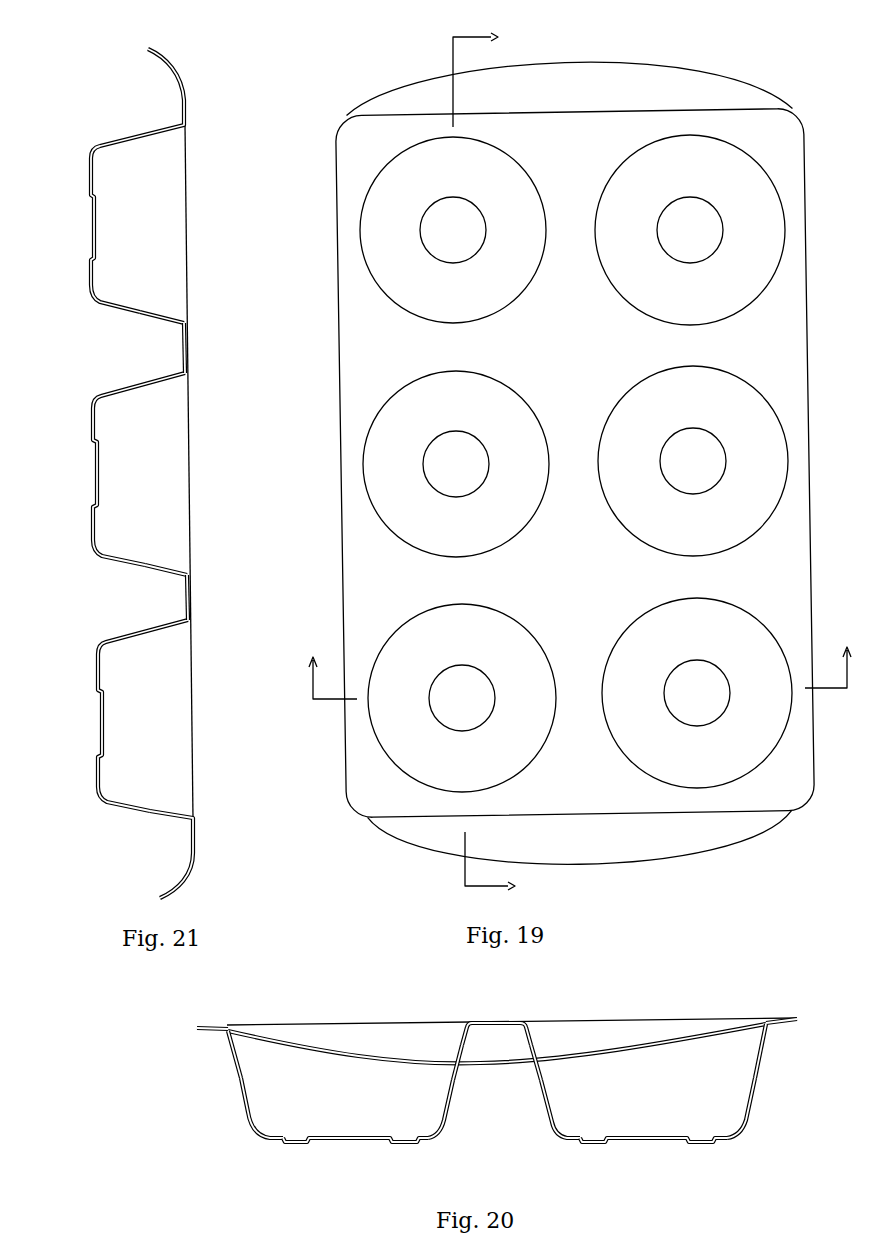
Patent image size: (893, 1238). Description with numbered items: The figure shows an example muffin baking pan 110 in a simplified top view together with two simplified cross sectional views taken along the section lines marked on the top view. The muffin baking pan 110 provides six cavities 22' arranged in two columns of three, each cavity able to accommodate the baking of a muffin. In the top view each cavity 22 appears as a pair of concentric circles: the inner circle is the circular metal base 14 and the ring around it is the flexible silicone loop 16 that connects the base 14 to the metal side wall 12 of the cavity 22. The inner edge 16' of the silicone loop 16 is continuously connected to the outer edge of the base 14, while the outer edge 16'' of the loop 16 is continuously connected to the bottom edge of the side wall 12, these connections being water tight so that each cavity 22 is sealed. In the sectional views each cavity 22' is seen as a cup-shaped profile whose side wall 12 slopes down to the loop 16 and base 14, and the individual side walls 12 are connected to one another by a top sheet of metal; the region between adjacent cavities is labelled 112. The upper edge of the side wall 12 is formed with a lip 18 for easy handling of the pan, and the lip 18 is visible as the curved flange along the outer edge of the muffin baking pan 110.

In FIG. 21, the side wall 12 is at (164, 322).
In FIG. 20, the side wall 12 is at (236, 1062).
In FIG. 19, the base 14 is at (575, 464).
In FIG. 21, the base 14 is at (89, 225).
In FIG. 20, the base 14 is at (345, 1140).
In FIG. 19, the silicone loop 16 is at (576, 463).
In FIG. 21, the silicone loop 16 is at (99, 557).
In FIG. 20, the silicone loop 16 is at (488, 1117).
In FIG. 19, the inner edge of silicone loop 16' is at (509, 483).
In FIG. 19, the outer edge of silicone loop 16'' is at (570, 491).
In FIG. 19, the lip 18 is at (670, 66).
In FIG. 21, the lip 18 is at (178, 888).
In FIG. 20, the lip 18 is at (498, 1066).
In FIG. 19, the cavity 22 is at (576, 457).
In FIG. 21, the muffin cavity 22' is at (202, 453).
In FIG. 19, the muffin baking pan 110 is at (561, 459).
In FIG. 21, the muffin baking pan 110 is at (150, 459).
In FIG. 20, the muffin baking pan 110 is at (435, 1080).
In FIG. 19, the web between cups 112 is at (612, 334).
In FIG. 21, the web between cups 112 is at (189, 350).
In FIG. 20, the web between cups 112 is at (492, 1023).